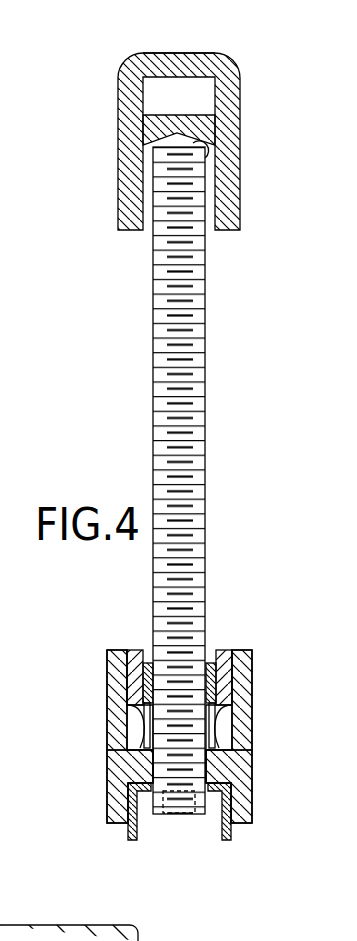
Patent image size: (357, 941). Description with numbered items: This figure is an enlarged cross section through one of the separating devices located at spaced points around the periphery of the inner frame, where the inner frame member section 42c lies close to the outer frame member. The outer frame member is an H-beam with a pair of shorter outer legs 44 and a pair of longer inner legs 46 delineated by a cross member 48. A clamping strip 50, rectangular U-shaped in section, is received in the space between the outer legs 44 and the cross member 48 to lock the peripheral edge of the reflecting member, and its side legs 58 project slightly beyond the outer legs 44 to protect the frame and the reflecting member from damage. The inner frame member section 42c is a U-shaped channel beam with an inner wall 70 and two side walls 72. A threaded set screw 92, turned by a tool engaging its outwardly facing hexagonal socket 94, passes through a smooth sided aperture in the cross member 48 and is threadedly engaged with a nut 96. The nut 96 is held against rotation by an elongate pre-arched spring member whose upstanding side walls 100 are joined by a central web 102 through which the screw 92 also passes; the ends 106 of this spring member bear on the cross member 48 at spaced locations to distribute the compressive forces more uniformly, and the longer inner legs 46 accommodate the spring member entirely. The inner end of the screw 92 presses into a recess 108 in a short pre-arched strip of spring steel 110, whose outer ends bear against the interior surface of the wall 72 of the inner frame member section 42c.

The inner frame member section 42c is at (131, 39).
The inner wall 70 is at (168, 53).
The side wall 72 is at (118, 138).
The pre-arched strip of spring steel 110 is at (187, 113).
The recess 108 is at (205, 158).
The threaded set screw 92 is at (206, 417).
The side wall 100 is at (135, 648).
The inner leg 46 is at (107, 675).
The nut 96 is at (213, 682).
The cross member 48 is at (143, 748).
The central web 102 is at (220, 725).
The ends of the spring member 106 is at (208, 755).
The outer leg 44 is at (107, 807).
The hexagonally shaped socket 94 is at (175, 816).
The clamping strip 50 is at (138, 827).
The side leg 58 is at (220, 828).